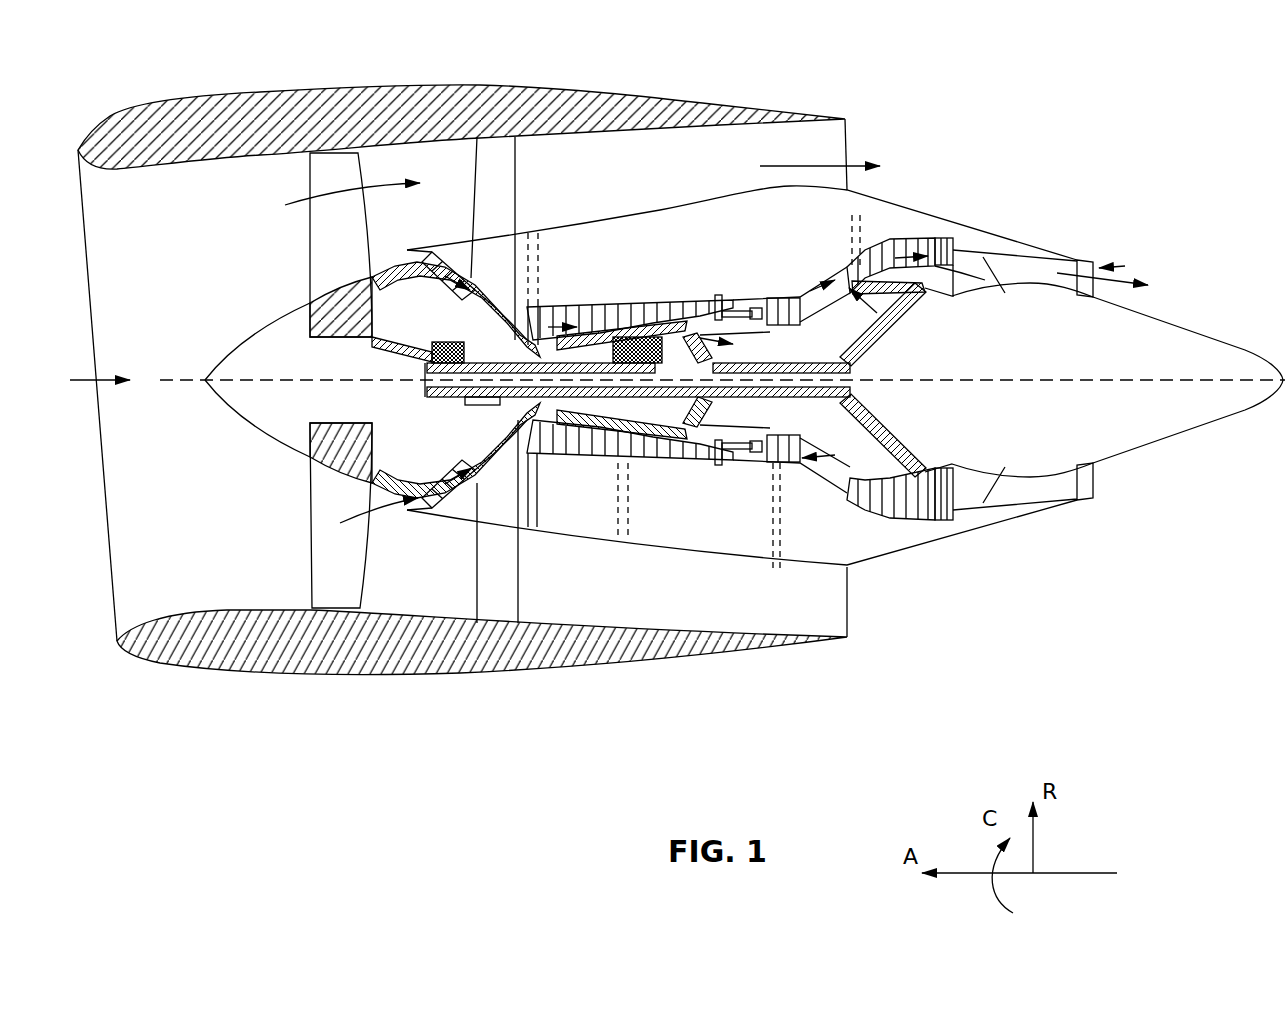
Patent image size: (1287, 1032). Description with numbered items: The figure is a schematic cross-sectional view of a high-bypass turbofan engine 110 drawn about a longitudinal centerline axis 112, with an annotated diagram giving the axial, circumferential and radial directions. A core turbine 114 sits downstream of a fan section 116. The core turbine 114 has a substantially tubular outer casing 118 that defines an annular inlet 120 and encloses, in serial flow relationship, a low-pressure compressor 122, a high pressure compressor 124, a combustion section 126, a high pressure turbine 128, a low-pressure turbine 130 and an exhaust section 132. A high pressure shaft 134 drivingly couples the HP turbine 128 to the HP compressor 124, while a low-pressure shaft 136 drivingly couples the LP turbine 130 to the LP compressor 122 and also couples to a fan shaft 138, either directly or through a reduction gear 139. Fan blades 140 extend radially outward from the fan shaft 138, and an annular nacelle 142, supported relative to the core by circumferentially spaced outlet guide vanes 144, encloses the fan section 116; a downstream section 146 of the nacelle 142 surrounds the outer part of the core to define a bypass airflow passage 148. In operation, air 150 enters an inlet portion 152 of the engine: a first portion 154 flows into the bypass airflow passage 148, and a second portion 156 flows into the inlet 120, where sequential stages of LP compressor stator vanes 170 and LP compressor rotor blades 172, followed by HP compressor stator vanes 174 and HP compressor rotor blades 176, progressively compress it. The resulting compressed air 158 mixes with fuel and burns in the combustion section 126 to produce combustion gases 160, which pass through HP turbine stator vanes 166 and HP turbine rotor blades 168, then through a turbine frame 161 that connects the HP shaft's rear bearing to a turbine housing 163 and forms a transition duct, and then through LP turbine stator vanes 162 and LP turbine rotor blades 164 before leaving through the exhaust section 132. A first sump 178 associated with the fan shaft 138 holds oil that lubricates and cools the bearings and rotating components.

The turbofan engine 110 is at (1005, 87).
The longitudinal or axial centerline axis 112 is at (1040, 378).
The core turbine 114 is at (658, 260).
The fan section 116 is at (216, 280).
The outer casing 118 is at (684, 558).
The annular inlet 120 is at (369, 526).
The low-pressure compressor 122 is at (477, 470).
The high pressure compressor 124 is at (548, 457).
The combustion section 126 is at (737, 457).
The high pressure turbine 128 is at (862, 440).
The low-pressure turbine 130 is at (937, 518).
The exhaust section 132 is at (1122, 262).
The high pressure shaft 134 is at (637, 372).
The low-pressure shaft 136 is at (483, 353).
The fan shaft 138 is at (370, 342).
The reduction gear 139 is at (487, 447).
The fan blades 140 is at (310, 558).
The nacelle 142 is at (360, 675).
The outlet guide vanes 144 is at (520, 163).
The downstream section of the nacelle 146 is at (745, 92).
The bypass airflow passage 148 is at (683, 183).
The air 150 is at (103, 378).
The inlet portion 152 is at (113, 607).
The first portion of the air 154 is at (328, 190).
The second portion of the air 156 is at (390, 262).
The compressed air 158 is at (722, 338).
The combustion gases 160 is at (896, 255).
The turbine frame 161 is at (862, 302).
The LP turbine stator vanes 162 is at (858, 253).
The turbine housing 163 is at (765, 292).
The LP turbine rotor blades 164 is at (853, 220).
The HP turbine stator vanes 166 is at (805, 516).
The HP turbine rotor blades 168 is at (758, 452).
The LP compressor stator vanes 170 is at (437, 503).
The LP compressor rotor blades 172 is at (452, 503).
The HP compressor stator vanes 174 is at (640, 432).
The HP compressor rotor blades 176 is at (663, 442).
The first sump 178 is at (428, 347).